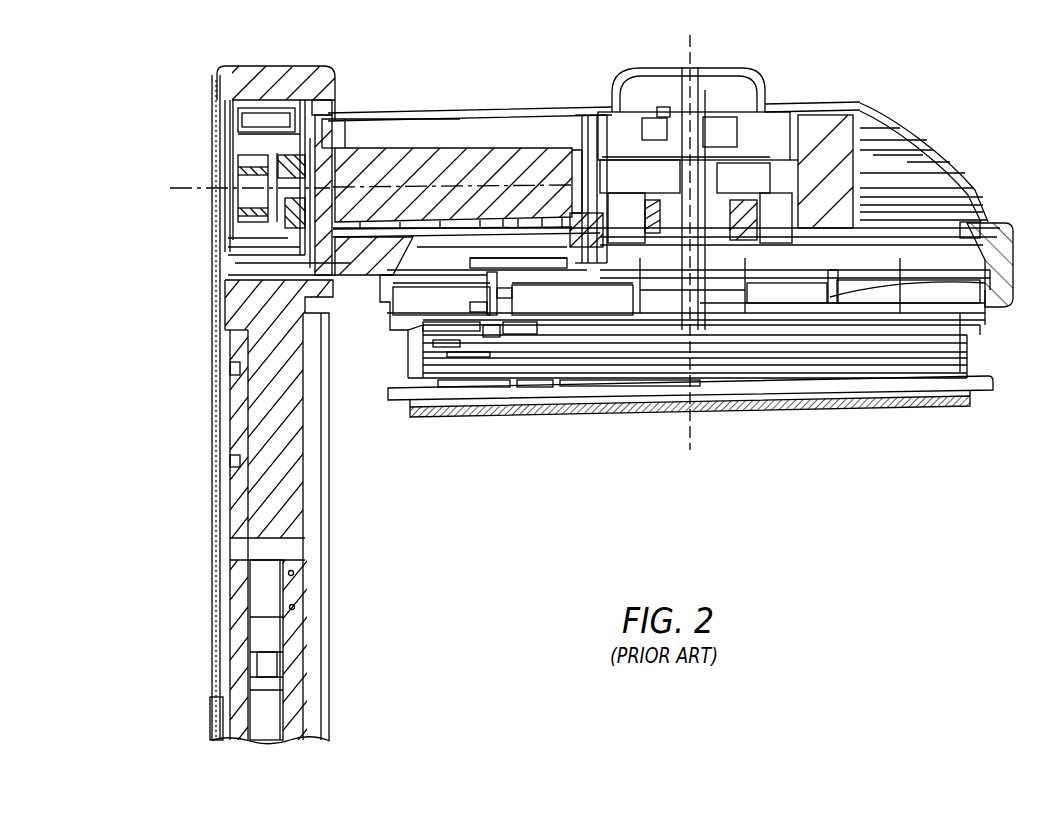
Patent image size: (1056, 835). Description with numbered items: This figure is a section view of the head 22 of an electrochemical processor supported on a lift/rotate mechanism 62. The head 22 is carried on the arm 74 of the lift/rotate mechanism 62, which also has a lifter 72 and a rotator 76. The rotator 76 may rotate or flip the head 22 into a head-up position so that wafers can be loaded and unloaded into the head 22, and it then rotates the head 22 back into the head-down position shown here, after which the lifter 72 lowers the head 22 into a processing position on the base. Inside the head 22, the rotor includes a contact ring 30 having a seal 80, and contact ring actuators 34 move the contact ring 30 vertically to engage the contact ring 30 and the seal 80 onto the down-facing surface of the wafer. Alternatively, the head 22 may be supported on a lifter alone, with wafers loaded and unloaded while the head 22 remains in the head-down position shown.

The head 22 is at (874, 80).
The contact ring 30 is at (792, 436).
The contact ring actuators 34 is at (990, 323).
The lift/rotate mechanism 62 is at (200, 250).
The lifter 72 is at (318, 515).
The arm 74 is at (407, 160).
The rotator 76 is at (370, 128).
The seal 80 is at (547, 417).